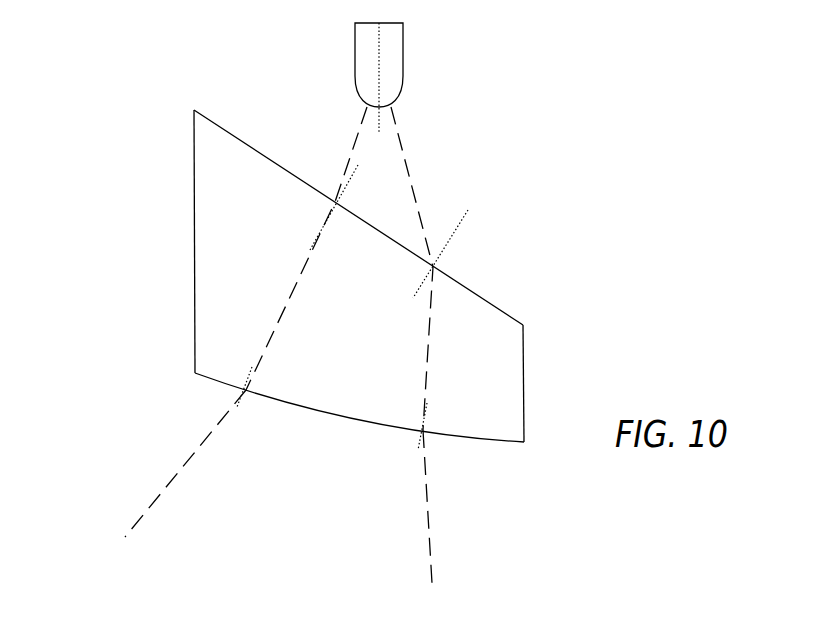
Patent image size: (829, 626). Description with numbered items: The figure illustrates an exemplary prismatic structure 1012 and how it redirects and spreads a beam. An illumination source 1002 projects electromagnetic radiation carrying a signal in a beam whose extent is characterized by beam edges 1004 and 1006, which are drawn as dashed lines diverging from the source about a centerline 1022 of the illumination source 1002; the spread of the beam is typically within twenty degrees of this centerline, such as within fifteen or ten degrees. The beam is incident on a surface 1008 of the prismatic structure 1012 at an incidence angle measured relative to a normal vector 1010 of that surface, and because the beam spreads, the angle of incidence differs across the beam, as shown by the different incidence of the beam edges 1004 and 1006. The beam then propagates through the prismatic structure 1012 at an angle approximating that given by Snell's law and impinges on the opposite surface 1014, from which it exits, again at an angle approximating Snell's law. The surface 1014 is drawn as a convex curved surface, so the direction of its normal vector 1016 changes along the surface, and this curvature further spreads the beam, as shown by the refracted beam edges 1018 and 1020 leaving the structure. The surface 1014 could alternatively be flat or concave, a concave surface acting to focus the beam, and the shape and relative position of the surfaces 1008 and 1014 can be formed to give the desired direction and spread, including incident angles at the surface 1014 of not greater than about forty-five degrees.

The illumination source 1002 is at (403, 55).
The beam edge 1004 is at (354, 160).
The beam edge 1006 is at (413, 183).
The surface 1008 is at (235, 135).
The normal vector 1010 is at (458, 229).
The prismatic structure 1012 is at (490, 338).
The surface 1014 is at (343, 417).
The normal vector 1016 is at (427, 409).
The refracted beam edge 1018 is at (182, 470).
The refracted beam edge 1020 is at (432, 583).
The centerline 1022 is at (379, 62).